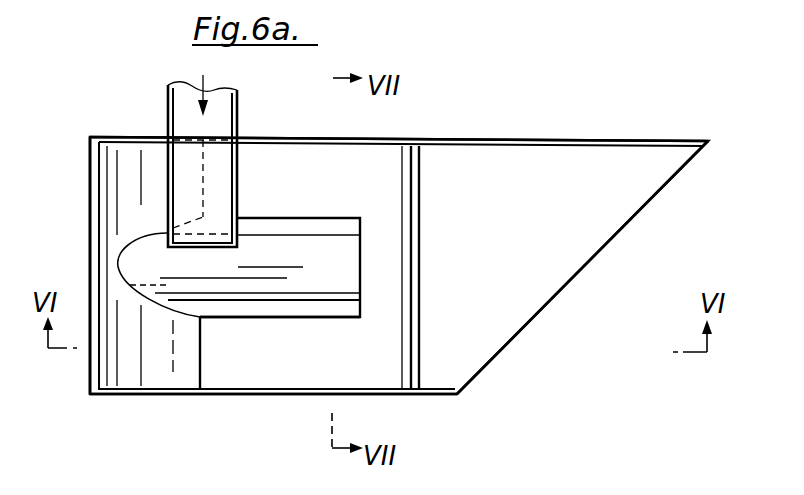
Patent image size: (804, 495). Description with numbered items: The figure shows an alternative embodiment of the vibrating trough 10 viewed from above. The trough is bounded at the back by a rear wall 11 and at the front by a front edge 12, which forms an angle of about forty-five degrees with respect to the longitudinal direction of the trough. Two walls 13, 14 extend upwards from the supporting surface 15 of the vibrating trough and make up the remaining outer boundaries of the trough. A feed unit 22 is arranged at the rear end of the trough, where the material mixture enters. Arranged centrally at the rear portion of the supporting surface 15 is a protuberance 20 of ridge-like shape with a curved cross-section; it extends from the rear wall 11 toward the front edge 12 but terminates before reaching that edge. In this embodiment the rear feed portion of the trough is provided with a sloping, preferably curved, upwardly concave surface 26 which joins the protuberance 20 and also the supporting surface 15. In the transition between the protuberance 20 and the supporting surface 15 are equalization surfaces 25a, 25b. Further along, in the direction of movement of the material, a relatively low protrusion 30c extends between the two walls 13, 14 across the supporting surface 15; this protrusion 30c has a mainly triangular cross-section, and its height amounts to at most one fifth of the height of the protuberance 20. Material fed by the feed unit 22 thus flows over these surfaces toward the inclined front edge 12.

The vibrating trough 10 is at (333, 79).
The rear wall 11 is at (90, 244).
The front edge 12 is at (547, 307).
The wall 13 is at (627, 145).
The wall 14 is at (442, 397).
The supporting surface 15 is at (270, 200).
The protuberance 20 is at (285, 280).
The feed unit 22 is at (184, 119).
The equalization surface 25a is at (335, 223).
The equalization surface 25b is at (333, 310).
The sloping upwardly concave surface 26 is at (127, 170).
The protrusion 30c is at (419, 272).